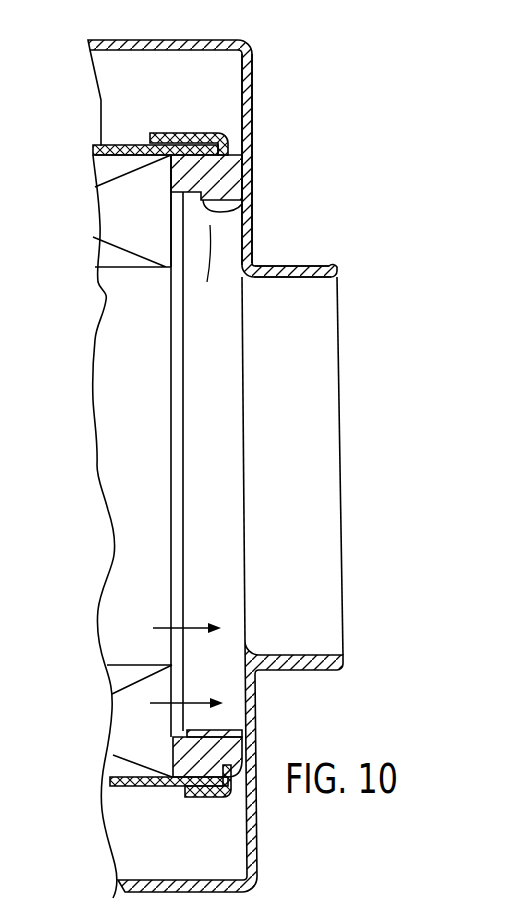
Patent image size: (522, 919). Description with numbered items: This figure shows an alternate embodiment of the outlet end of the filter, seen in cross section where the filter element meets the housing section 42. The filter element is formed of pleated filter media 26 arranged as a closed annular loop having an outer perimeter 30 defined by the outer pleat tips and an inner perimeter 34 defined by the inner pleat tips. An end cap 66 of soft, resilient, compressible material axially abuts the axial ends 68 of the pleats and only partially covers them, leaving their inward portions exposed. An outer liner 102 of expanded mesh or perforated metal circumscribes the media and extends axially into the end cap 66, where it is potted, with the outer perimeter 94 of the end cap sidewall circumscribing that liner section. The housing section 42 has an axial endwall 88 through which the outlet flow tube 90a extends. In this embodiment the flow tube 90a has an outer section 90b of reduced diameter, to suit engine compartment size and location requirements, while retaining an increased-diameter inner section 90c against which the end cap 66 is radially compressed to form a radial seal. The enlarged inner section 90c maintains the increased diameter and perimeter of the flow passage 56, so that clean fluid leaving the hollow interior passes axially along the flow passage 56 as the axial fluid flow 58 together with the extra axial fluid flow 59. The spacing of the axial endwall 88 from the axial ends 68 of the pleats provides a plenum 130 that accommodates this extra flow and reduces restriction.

The housing section 42 is at (128, 42).
The outer liner 102 is at (92, 148).
The outer perimeter of end cap sidewall 94 is at (196, 134).
The end cap 66 is at (217, 173).
The inner section of outlet flow tube 90c is at (243, 202).
The axial endwall 88 is at (253, 220).
The outer section of outlet flow tube 90b is at (292, 264).
The outlet flow tube 90a is at (339, 267).
The outer perimeter 30 is at (111, 157).
The pleated filter media 26 is at (105, 196).
The axial ends of the pleats 68 is at (171, 227).
The inner perimeter 34 is at (105, 267).
The plenum 130 is at (206, 267).
The flow passage 56 is at (152, 405).
The arrows (axial fluid flow) 58 is at (198, 622).
The arrows (extra axial fluid flow) 59 is at (196, 700).